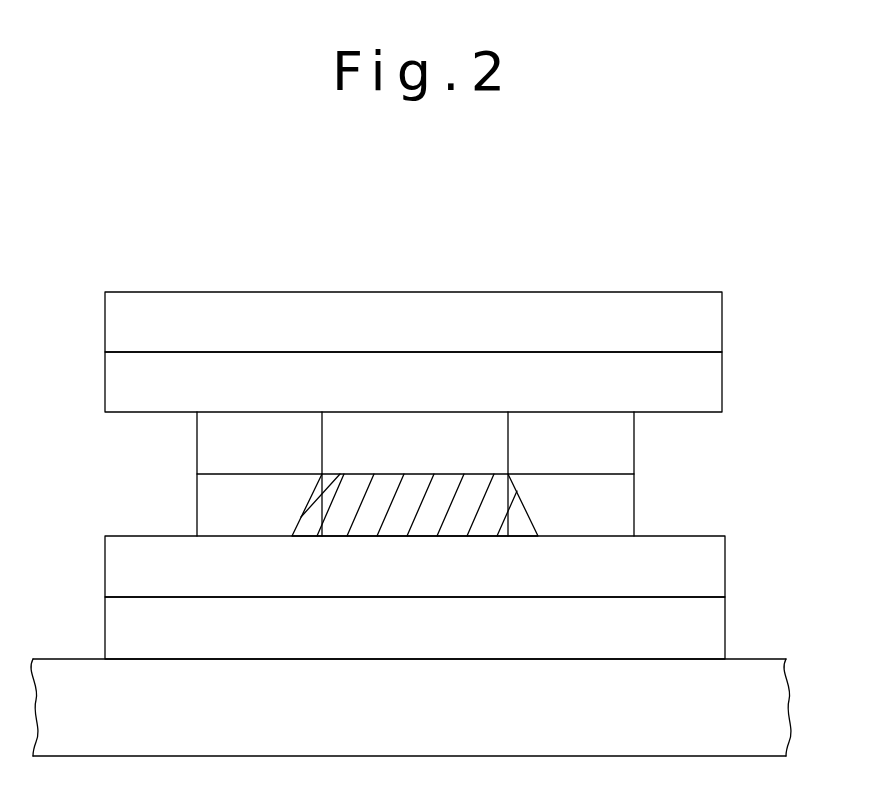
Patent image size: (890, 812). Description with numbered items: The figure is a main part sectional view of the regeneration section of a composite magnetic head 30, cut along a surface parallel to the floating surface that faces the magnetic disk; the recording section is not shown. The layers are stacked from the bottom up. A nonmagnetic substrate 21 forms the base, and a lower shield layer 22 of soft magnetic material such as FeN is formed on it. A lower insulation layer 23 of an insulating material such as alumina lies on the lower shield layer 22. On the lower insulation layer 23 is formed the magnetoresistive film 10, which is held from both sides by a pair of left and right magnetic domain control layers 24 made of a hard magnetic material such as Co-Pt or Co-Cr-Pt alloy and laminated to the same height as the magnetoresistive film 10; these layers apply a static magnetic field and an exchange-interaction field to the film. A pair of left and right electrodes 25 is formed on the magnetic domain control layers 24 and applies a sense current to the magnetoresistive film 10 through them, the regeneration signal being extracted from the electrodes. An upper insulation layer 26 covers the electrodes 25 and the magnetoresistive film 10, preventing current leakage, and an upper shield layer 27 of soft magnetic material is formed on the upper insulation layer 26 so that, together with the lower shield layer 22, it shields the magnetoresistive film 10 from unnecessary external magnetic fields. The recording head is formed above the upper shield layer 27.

The magnetic head 30 is at (771, 249).
The upper shield layer 27 is at (700, 334).
The upper insulation layer 26 is at (700, 380).
The electrodes 25 is at (622, 445).
The magnetic domain control layers 24 is at (622, 481).
The magnetoresistive film 10 is at (518, 528).
The lower insulation layer 23 is at (712, 563).
The lower shield layer 22 is at (712, 618).
The nonmagnetic substrate 21 is at (777, 683).